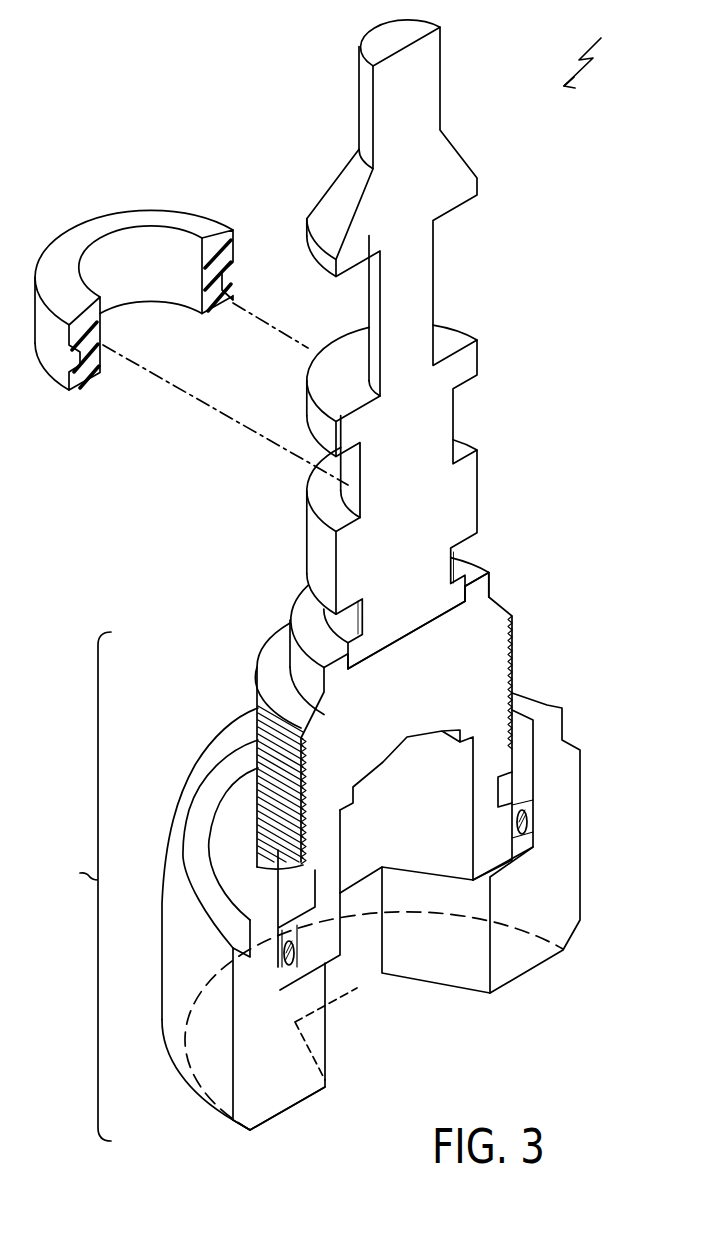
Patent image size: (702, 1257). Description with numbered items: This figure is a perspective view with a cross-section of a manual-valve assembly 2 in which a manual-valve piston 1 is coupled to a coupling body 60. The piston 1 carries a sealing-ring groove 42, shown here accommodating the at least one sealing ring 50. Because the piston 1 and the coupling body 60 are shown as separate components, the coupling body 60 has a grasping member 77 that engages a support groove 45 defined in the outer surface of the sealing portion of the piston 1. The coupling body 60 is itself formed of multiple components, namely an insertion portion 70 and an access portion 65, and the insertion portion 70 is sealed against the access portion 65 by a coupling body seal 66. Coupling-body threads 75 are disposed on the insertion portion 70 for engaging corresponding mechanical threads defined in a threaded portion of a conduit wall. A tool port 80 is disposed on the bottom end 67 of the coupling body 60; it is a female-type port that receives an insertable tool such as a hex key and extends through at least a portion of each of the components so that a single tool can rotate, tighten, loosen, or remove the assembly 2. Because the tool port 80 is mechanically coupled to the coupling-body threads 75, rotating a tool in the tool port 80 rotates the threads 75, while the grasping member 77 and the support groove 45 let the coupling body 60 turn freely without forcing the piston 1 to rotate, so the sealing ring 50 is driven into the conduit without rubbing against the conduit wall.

The manual-valve piston 1 is at (394, 344).
The manual-valve assembly 2 is at (588, 47).
The sealing-ring groove 42 is at (348, 497).
The support groove 45 is at (457, 590).
The sealing ring 50 is at (102, 227).
The coupling body 60 is at (73, 886).
The access portion 65 is at (177, 971).
The coupling body seal 66 is at (530, 823).
The bottom end 67 is at (287, 1080).
The insertion portion 70 is at (356, 781).
The coupling-body threads 75 is at (512, 647).
The grasping member 77 is at (473, 572).
The tool port 80 is at (355, 982).